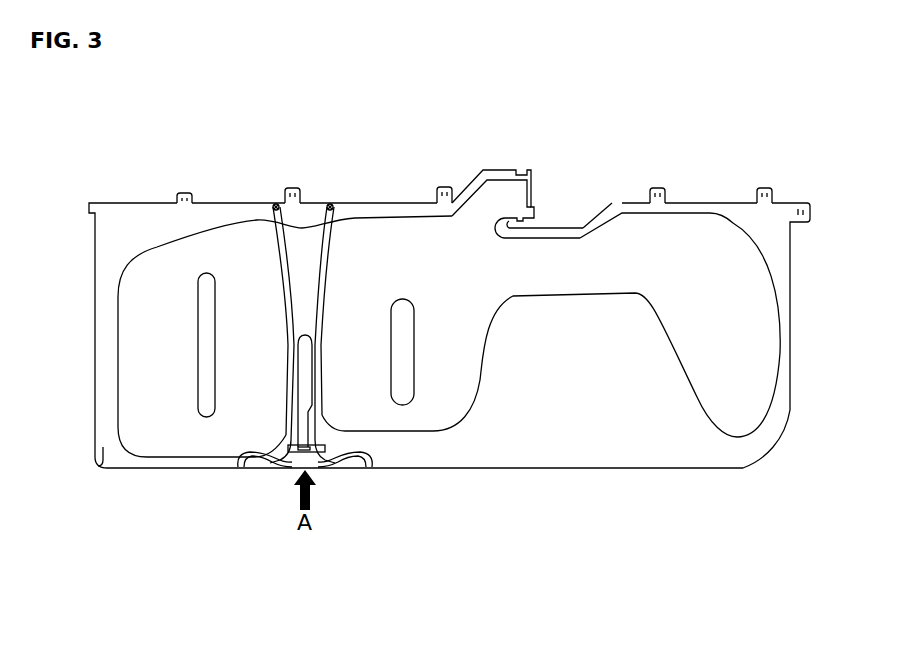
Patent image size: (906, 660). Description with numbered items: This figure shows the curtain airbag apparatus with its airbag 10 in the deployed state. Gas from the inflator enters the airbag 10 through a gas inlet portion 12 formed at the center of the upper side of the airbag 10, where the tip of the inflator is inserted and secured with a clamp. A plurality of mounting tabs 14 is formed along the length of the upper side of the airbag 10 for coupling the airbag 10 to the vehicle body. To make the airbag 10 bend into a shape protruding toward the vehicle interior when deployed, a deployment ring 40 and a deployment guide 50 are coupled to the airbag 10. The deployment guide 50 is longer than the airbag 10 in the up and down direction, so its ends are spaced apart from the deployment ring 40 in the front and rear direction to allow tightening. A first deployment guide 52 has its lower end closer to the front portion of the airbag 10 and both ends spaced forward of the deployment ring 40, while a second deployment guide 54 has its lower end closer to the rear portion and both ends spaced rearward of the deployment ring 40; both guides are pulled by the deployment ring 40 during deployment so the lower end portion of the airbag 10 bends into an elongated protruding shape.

The airbag 10 is at (100, 467).
The gas inlet portion 12 is at (495, 170).
The mounting tabs 14 is at (183, 193).
The deployment ring 40 is at (350, 467).
The deployment guide 50 is at (312, 398).
The first deployment guide 52 is at (287, 470).
The second deployment guide 54 is at (330, 467).